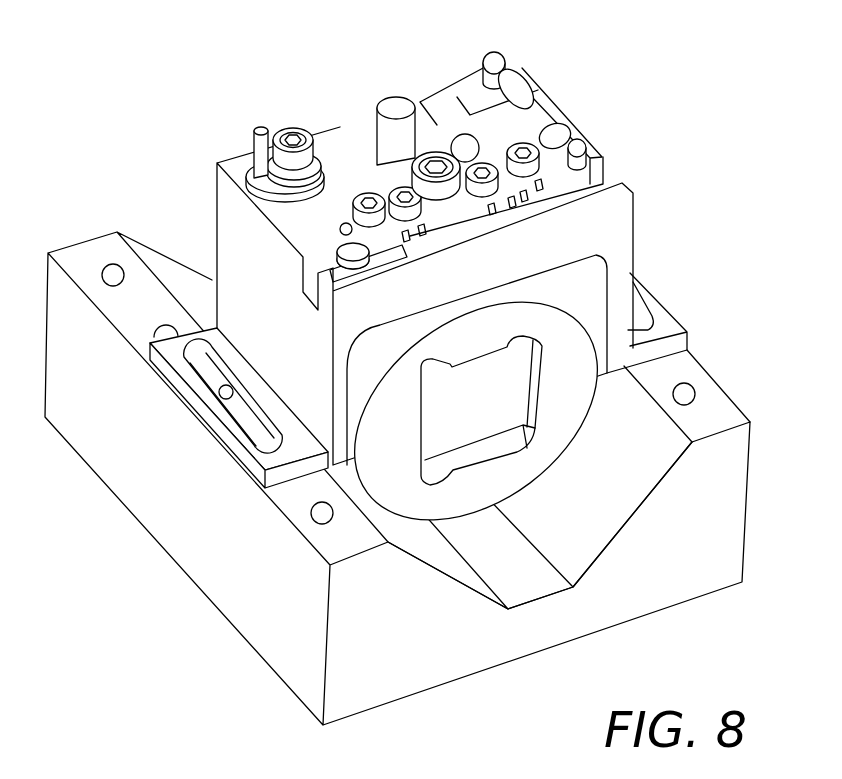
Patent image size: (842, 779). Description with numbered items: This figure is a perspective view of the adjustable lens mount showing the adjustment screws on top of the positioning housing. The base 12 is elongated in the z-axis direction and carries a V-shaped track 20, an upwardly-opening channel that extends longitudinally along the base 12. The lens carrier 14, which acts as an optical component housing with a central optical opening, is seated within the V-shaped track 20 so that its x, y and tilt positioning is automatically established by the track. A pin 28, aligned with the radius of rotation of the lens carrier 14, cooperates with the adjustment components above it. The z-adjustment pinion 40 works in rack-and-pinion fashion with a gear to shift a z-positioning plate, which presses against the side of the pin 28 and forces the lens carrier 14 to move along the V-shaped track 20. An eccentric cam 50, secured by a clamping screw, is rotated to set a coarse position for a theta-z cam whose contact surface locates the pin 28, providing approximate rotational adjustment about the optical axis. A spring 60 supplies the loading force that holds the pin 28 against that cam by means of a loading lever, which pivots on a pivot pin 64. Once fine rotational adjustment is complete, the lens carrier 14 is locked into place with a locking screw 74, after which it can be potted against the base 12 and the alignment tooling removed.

The base 12 is at (115, 497).
The lens carrier 14 is at (573, 438).
The V-shaped track 20 is at (540, 535).
The pin 28 is at (377, 127).
The z-adjustment pinion 40 is at (603, 181).
The eccentric cam 50 is at (302, 128).
The spring 60 is at (563, 105).
The pivot pin 64 is at (539, 90).
The locking screw 74 is at (423, 102).